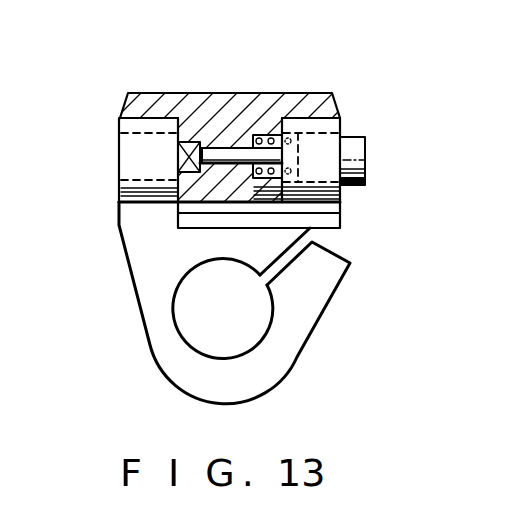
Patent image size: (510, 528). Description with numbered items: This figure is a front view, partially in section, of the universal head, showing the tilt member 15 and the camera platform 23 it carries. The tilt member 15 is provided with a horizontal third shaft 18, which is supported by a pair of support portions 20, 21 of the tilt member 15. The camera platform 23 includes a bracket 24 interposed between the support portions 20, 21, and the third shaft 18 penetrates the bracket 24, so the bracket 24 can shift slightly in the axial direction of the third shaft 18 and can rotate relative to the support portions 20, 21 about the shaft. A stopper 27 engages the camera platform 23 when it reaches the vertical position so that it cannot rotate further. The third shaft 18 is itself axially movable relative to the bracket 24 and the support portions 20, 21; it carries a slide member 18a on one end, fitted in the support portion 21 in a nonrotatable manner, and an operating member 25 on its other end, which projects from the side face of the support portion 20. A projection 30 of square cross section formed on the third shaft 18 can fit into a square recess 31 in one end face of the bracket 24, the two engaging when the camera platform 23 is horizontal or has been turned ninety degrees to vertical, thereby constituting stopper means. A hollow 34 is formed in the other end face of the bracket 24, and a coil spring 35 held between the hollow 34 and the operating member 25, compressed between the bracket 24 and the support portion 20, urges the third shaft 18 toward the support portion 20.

The tilt member 15 is at (143, 328).
The third shaft 18 is at (217, 157).
The slide member 18a is at (130, 157).
The support portion 20 is at (330, 128).
The support portion 21 is at (130, 122).
The camera platform 23 is at (338, 90).
The bracket 24 is at (200, 188).
The operating member 25 is at (365, 160).
The stopper 27 is at (268, 207).
The projection 30 is at (188, 141).
The recess 31 is at (201, 148).
The hollow 34 is at (260, 136).
The coil spring 35 is at (268, 136).